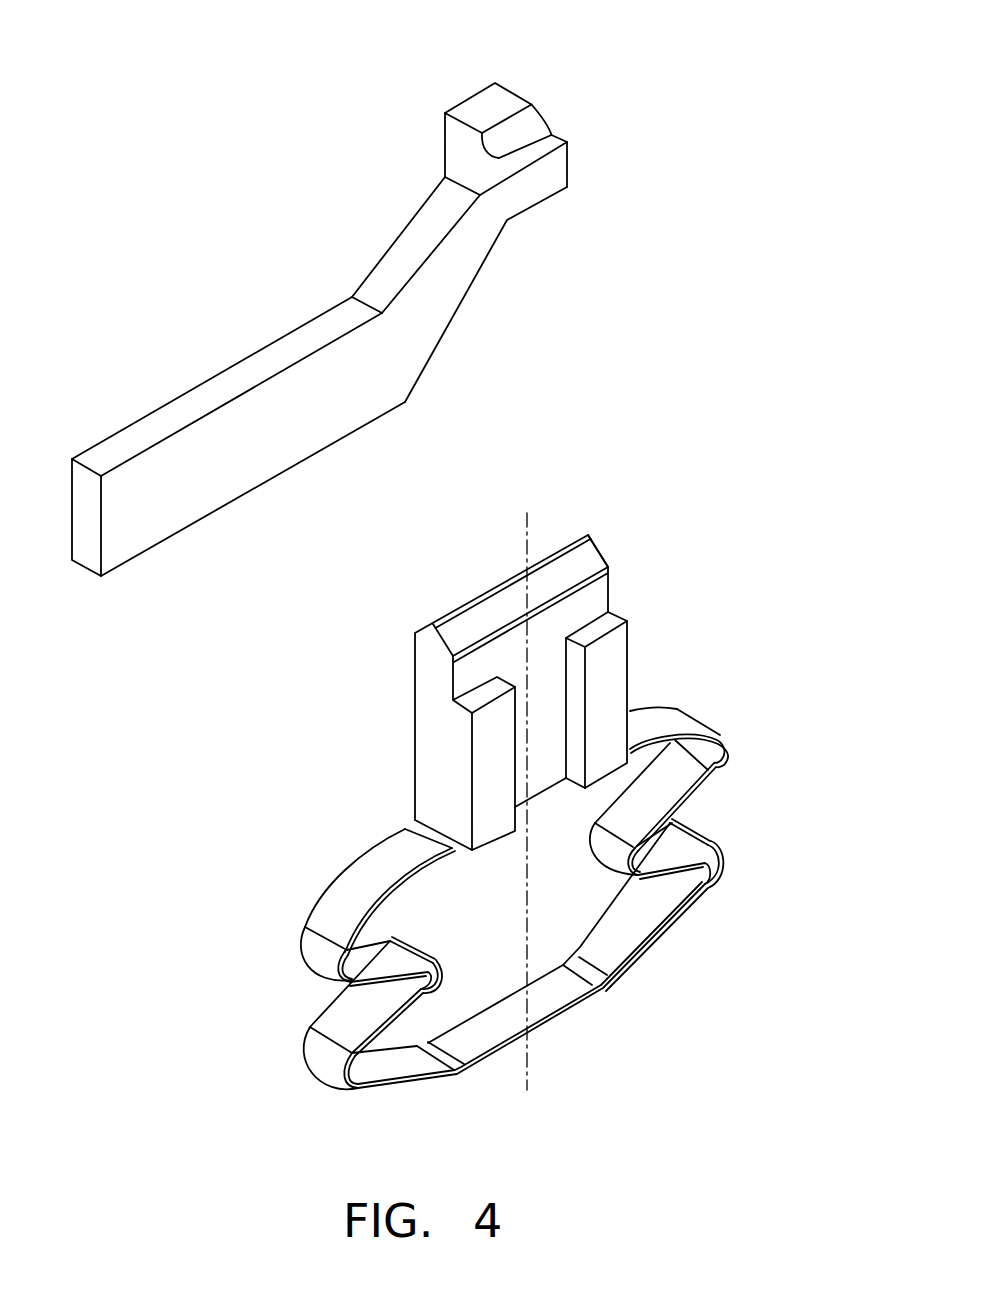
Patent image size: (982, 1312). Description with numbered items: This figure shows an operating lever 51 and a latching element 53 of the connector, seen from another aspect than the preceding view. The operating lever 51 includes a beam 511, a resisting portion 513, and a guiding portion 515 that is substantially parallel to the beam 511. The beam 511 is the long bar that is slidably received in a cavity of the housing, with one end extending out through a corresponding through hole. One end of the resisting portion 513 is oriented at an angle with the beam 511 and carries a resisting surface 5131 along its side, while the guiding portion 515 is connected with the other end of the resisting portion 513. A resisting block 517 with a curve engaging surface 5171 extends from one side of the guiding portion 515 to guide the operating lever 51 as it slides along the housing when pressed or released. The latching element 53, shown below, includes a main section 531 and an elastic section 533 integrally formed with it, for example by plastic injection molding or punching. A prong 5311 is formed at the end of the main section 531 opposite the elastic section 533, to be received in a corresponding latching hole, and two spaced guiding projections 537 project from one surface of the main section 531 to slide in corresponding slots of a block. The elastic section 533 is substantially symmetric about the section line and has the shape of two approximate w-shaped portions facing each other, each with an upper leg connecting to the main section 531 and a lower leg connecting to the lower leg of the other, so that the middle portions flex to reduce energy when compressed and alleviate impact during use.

The operating lever 51 is at (233, 299).
The beam 511 is at (200, 453).
The resisting portion 513 is at (418, 245).
The resisting surface 5131 is at (483, 270).
The guiding portion 515 is at (547, 144).
The resisting block 517 is at (497, 107).
The curve engaging surface 5171 is at (526, 127).
The latching element 53 is at (323, 808).
The main section 531 is at (435, 733).
The prong 5311 is at (583, 561).
The guiding projection 537 is at (613, 672).
The elastic section 533 is at (635, 923).